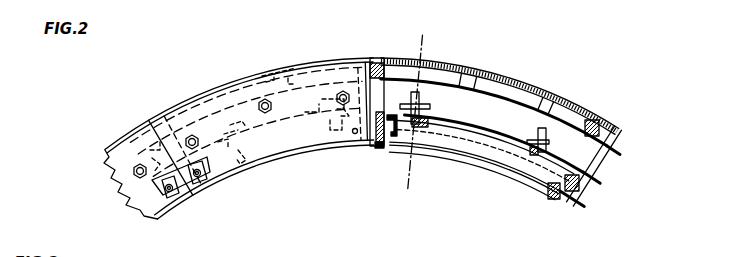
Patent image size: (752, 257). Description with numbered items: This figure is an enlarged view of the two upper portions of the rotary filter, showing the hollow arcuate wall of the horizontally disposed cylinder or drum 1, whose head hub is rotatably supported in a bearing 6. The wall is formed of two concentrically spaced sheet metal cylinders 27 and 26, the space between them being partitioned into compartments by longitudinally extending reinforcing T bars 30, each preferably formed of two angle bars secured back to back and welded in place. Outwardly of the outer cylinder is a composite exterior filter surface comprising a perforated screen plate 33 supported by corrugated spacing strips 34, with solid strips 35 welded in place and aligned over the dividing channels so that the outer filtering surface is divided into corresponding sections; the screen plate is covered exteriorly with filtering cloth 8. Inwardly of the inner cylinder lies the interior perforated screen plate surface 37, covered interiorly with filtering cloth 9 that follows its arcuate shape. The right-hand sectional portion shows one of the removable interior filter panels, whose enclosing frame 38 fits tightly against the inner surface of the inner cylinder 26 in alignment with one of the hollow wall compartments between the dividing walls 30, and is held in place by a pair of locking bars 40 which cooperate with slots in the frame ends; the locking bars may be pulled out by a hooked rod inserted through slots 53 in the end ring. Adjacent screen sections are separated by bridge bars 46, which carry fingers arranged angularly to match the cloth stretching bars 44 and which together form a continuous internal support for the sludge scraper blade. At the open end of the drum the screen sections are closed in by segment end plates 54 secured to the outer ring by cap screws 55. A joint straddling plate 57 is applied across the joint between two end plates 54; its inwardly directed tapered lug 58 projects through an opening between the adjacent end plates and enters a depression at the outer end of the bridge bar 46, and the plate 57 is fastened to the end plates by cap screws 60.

The cylinder or drum 1 is at (494, 110).
The bearing 6 is at (424, 42).
The exterior filtering cloth 8 is at (512, 79).
The interior filtering cloth 9 is at (482, 161).
The inner sheet metal cylinder 26 is at (458, 117).
The outer sheet metal cylinder 27 is at (465, 82).
The T bars 30 is at (585, 158).
The perforated screen plate 33 is at (570, 113).
The corrugated spacing strips 34 is at (547, 97).
The solid strips 35 is at (609, 140).
The interior perforated screen plate 37 is at (462, 163).
The enclosing frame 38 is at (383, 147).
The locking bars 40 is at (424, 101).
The cloth stretching bars 44 is at (510, 162).
The bridge bars 46 is at (557, 188).
The slots 53 is at (330, 110).
The segment end plates 54 is at (272, 143).
The cap screws 55 is at (268, 99).
The joint straddling plate 57 is at (215, 178).
The tapered lug 58 is at (203, 192).
The cap screws 60 is at (172, 203).